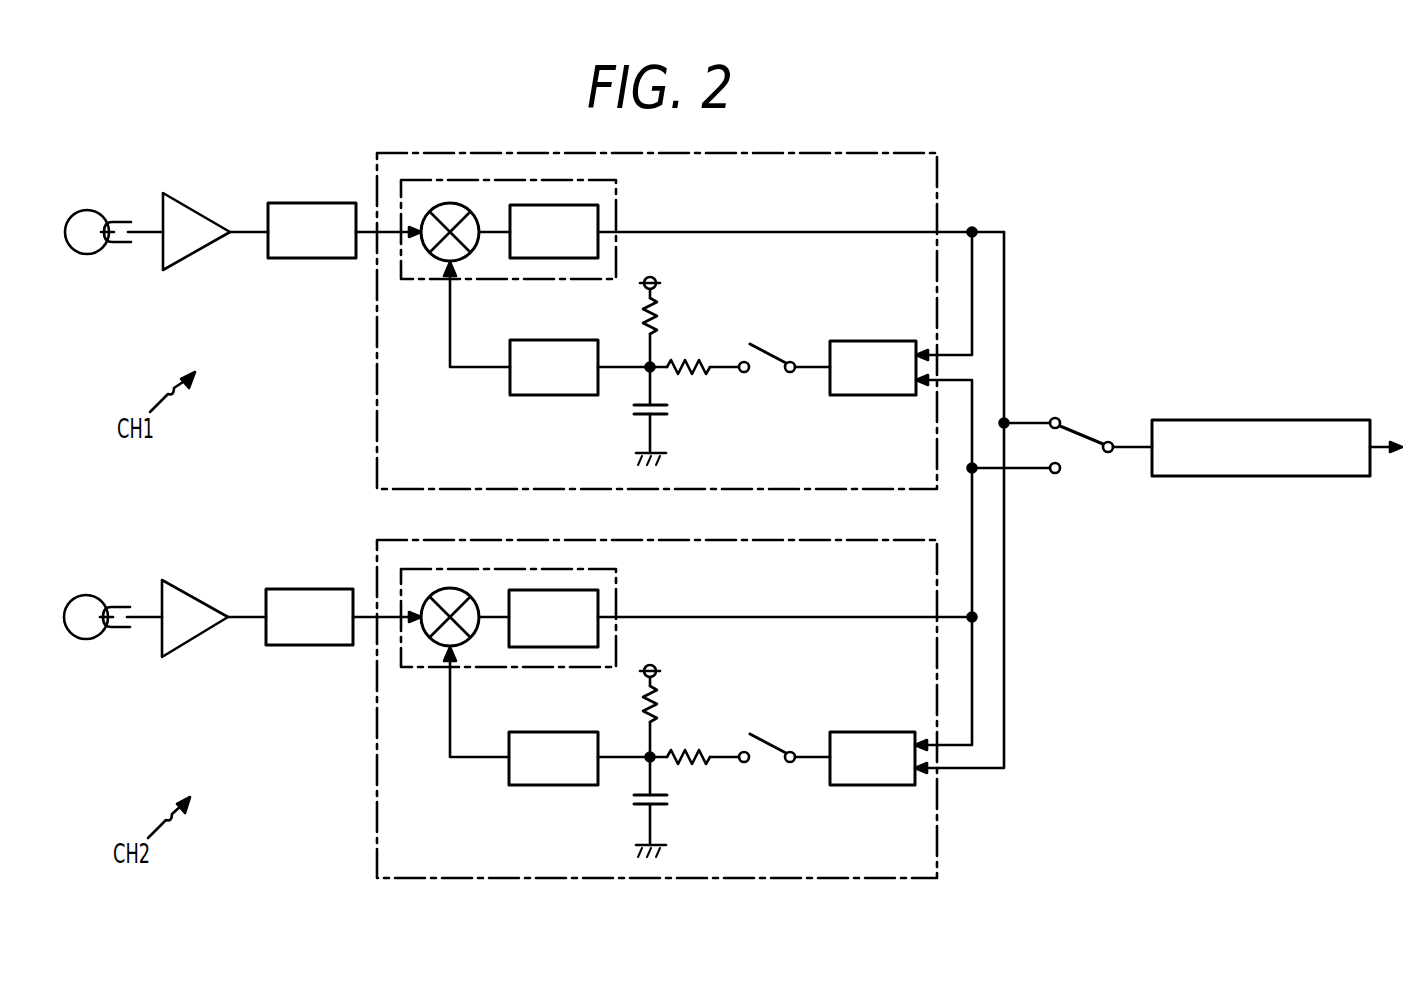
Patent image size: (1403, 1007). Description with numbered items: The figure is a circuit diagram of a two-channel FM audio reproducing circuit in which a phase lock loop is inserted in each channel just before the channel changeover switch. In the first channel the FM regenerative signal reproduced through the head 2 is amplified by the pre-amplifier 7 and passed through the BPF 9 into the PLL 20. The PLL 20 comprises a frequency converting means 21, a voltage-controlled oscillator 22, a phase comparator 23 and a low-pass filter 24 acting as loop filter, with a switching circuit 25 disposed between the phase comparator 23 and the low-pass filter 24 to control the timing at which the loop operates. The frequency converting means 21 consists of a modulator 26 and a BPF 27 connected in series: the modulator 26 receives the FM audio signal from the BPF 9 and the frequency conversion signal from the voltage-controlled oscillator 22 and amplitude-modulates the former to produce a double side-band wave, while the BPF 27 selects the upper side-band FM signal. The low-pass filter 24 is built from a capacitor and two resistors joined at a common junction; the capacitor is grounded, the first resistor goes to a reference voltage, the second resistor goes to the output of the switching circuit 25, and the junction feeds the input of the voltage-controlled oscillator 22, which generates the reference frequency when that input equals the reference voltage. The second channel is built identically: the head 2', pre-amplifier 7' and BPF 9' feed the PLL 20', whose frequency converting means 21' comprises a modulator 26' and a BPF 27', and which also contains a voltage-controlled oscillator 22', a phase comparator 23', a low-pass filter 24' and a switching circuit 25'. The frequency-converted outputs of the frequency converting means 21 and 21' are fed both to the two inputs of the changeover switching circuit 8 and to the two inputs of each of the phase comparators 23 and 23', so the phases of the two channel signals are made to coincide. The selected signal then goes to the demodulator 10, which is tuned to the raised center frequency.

The head 2 is at (114, 206).
The pre-amplifier 7 is at (215, 214).
The BPF 9 is at (344, 206).
The phase lock loop circuit 20 is at (657, 321).
The frequency converting means 21 is at (508, 262).
The voltage-controlled oscillator 22 is at (512, 354).
The phase comparator 23 is at (878, 344).
The low-pass filter 24 is at (673, 367).
The switching circuit 25 is at (784, 335).
The modulator 26 is at (467, 222).
The BPF 27 is at (757, 220).
The changeover switching circuit 8 is at (1078, 428).
The demodulator 10 is at (1349, 420).
The head 2' is at (113, 589).
The pre-amplifier 7' is at (214, 598).
The BPF 9' is at (343, 592).
The phase lock loop circuit 20' is at (657, 709).
The frequency converting means 21' is at (508, 649).
The voltage-controlled oscillator 22' is at (512, 743).
The phase comparator 23' is at (880, 729).
The low-pass filter 24' is at (677, 757).
The switching circuit 25' is at (784, 725).
The modulator 26' is at (471, 609).
The BPF 27' is at (740, 609).